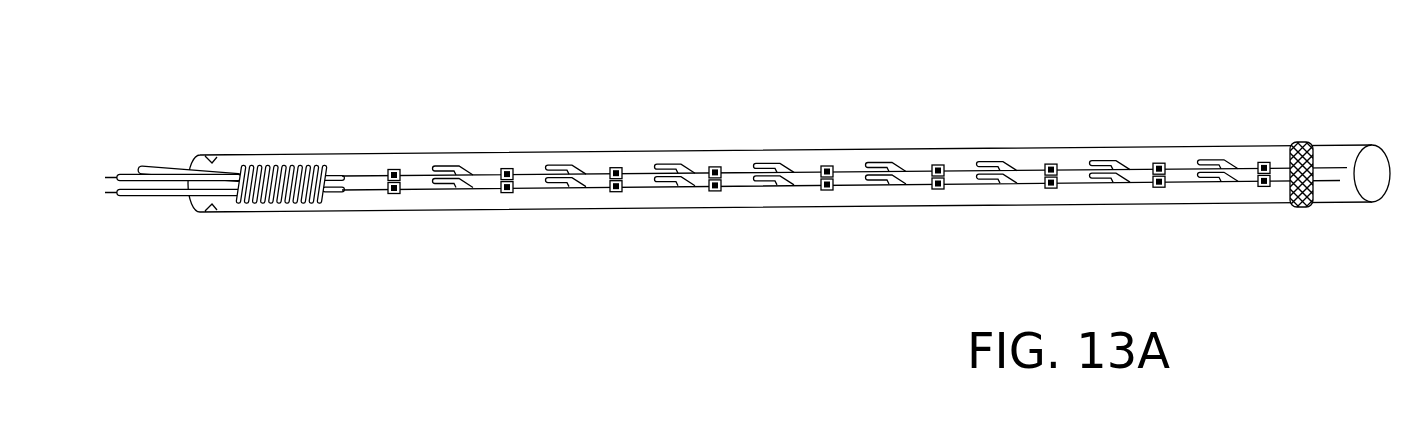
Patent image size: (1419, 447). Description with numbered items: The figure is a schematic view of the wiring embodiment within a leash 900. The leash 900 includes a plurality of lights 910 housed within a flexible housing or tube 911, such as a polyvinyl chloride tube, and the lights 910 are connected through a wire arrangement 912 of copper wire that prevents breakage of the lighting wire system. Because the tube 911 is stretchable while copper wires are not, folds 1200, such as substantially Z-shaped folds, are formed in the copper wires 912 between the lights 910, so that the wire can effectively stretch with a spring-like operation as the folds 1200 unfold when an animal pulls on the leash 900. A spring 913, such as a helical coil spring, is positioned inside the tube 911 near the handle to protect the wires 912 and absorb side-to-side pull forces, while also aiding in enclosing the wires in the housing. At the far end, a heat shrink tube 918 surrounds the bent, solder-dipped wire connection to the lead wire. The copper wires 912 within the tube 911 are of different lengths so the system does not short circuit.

The leash 900 is at (504, 110).
The lights 910 is at (394, 194).
The flexible housing or tube 911 is at (737, 160).
The wire arrangement 912 is at (412, 190).
The spring 913 is at (293, 167).
The heat shrink tube 918 is at (1305, 142).
The folds 1200 is at (878, 161).